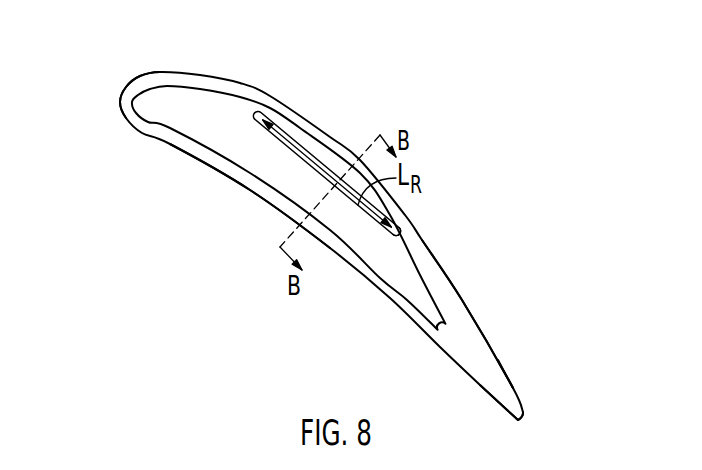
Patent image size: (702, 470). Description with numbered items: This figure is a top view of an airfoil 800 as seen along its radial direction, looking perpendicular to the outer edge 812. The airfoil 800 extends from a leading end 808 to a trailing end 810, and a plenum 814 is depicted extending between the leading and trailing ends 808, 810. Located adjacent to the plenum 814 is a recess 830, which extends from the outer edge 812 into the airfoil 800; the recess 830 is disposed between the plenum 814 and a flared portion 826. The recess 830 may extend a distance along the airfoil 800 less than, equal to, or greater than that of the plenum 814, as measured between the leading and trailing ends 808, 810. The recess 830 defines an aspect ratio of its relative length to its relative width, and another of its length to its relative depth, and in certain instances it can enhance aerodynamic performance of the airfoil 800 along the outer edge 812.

The airfoil 800 is at (140, 82).
The leading end 808 is at (121, 91).
The trailing end 810 is at (520, 420).
The outer edge 812 is at (461, 338).
The plenum 814 is at (217, 132).
The flared portion 826 is at (330, 137).
The recess 830 is at (392, 222).